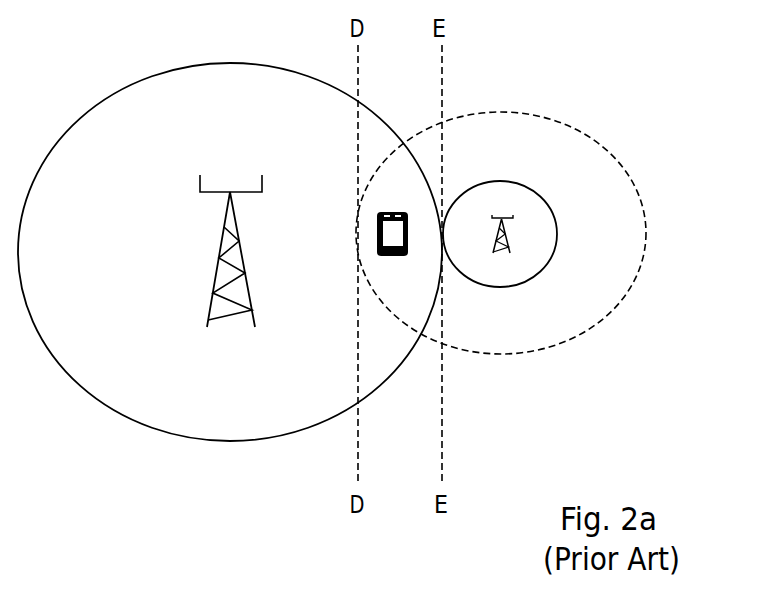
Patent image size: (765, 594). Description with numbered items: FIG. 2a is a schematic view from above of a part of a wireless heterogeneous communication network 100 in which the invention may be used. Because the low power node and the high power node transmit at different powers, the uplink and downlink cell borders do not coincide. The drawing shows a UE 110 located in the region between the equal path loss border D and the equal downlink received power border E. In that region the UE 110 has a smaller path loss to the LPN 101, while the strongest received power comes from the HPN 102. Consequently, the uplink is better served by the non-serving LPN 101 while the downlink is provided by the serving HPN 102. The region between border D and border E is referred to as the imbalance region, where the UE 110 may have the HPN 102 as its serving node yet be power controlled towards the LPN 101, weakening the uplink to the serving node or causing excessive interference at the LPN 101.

The wireless communication system / small cell coverage area 100 is at (530, 80).
The LPN 101 is at (508, 253).
The HPN 102 is at (207, 327).
The UE 110 is at (377, 222).